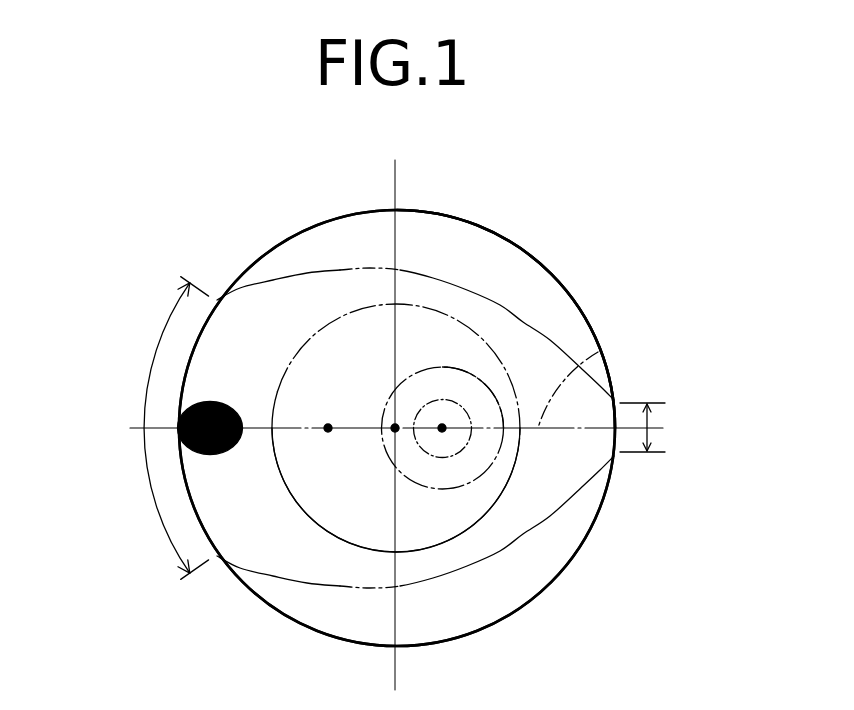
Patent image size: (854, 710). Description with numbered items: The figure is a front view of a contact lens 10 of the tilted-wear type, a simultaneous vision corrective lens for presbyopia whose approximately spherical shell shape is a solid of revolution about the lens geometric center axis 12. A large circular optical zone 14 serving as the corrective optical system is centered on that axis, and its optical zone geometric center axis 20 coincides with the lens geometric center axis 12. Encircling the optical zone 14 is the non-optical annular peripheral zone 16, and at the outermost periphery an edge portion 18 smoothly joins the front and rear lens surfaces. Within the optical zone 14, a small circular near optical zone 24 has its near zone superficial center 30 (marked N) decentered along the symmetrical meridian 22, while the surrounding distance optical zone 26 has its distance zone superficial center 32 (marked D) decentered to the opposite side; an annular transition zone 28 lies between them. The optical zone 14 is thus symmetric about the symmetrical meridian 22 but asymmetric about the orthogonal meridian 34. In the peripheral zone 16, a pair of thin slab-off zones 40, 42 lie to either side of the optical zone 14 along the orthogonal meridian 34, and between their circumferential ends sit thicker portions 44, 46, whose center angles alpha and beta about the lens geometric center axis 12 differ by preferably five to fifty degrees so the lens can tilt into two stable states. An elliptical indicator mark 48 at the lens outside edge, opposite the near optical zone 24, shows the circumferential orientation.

The contact lens 10 is at (633, 193).
The lens geometric center axis 12 is at (395, 428).
The optical zone geometric center axis 20 is at (397, 428).
The optical zone 14 is at (507, 347).
The peripheral zone 16 is at (453, 300).
The edge portion 18 is at (458, 217).
The symmetrical meridian 22 is at (598, 351).
The near optical zone 24 is at (453, 448).
The distance optical zone 26 is at (350, 510).
The transition zone 28 is at (442, 478).
The near zone superficial center 30 is at (442, 428).
The distance zone superficial center 32 is at (328, 428).
The orthogonal meridian 34 is at (396, 190).
The slab-off zone 40 is at (362, 228).
The slab-off zone 42 is at (363, 617).
The thicker portion 44 is at (208, 350).
The thicker portion 46 is at (590, 418).
The indicator mark 48 is at (197, 403).